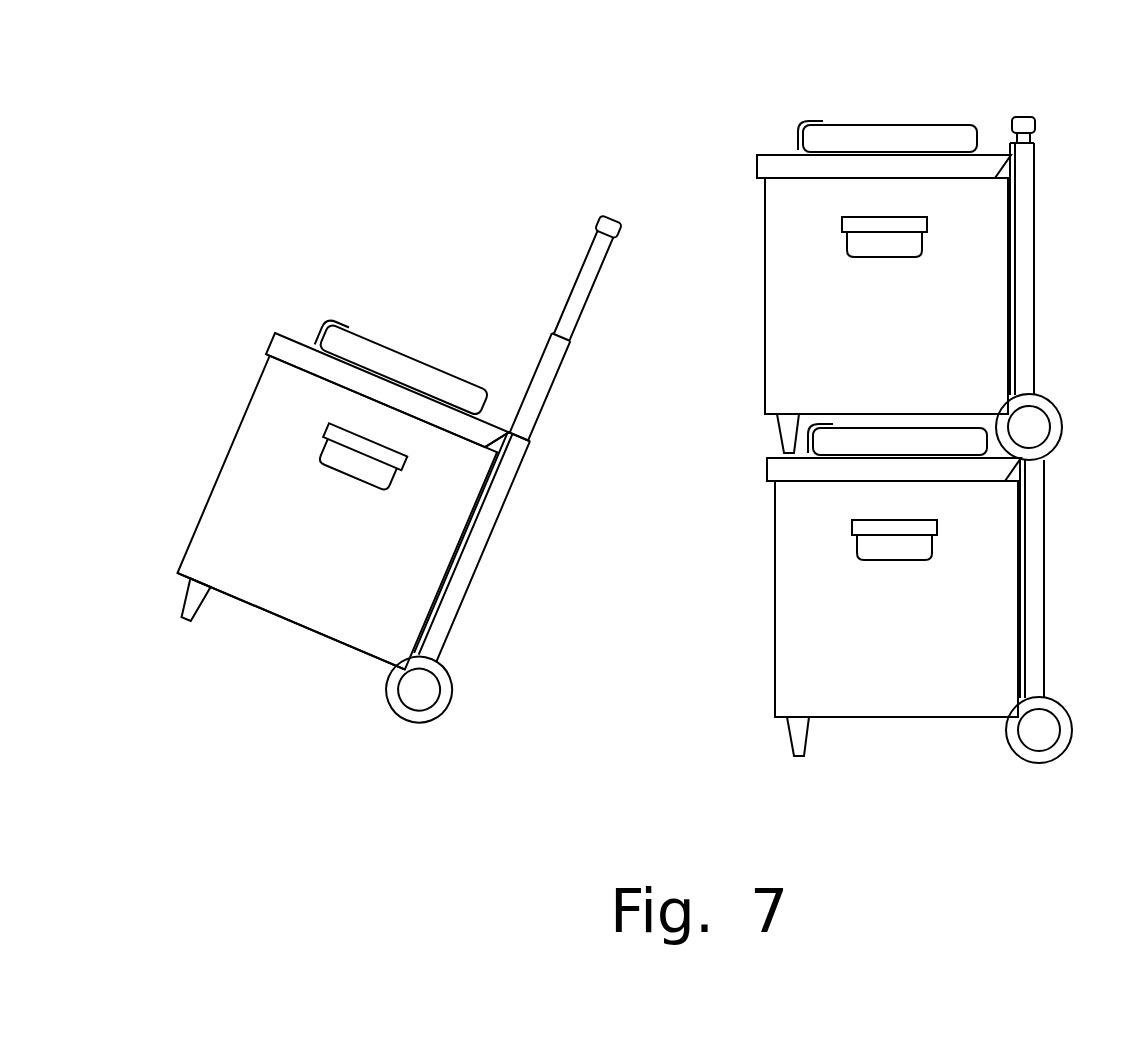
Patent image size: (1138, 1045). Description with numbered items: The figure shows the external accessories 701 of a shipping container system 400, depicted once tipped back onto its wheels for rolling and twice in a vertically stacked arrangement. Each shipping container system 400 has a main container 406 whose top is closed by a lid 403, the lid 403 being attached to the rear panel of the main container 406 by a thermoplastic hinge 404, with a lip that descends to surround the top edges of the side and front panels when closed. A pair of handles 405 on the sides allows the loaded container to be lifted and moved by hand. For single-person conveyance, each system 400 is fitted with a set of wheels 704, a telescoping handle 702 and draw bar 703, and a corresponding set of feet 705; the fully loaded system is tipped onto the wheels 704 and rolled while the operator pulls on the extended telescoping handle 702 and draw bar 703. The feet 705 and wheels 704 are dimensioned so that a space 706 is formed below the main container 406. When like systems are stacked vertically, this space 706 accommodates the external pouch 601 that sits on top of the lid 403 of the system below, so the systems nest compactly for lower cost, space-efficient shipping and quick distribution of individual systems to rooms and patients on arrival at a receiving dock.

The external accessories 701 is at (644, 53).
The shipping container system 400 is at (427, 234).
The lid 403 is at (277, 333).
The thermoplastic hinge 404 is at (508, 430).
The handles 405 is at (375, 492).
The main container 406 is at (269, 557).
The external pouch 601 is at (367, 350).
The telescoping handle 702 is at (598, 221).
The draw bar 703 is at (553, 336).
The wheels 704 is at (440, 720).
The feet 705 is at (183, 623).
The space 706 is at (299, 662).